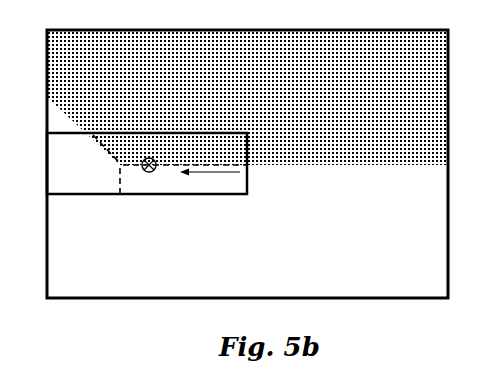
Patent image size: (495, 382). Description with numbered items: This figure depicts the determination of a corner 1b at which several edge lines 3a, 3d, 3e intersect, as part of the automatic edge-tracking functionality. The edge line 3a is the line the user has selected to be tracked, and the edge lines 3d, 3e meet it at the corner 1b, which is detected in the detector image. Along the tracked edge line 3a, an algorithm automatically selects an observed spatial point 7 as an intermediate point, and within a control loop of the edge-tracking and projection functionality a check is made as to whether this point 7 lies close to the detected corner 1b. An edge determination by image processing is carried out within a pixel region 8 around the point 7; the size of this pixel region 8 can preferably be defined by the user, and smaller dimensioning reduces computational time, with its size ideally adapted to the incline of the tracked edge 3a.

The corner 1b is at (117, 165).
The edge line 3a is at (172, 165).
The edge line 3d is at (120, 166).
The edge line 3e is at (95, 133).
The observed spatial point 7 is at (154, 170).
The pixel region 8 is at (247, 180).